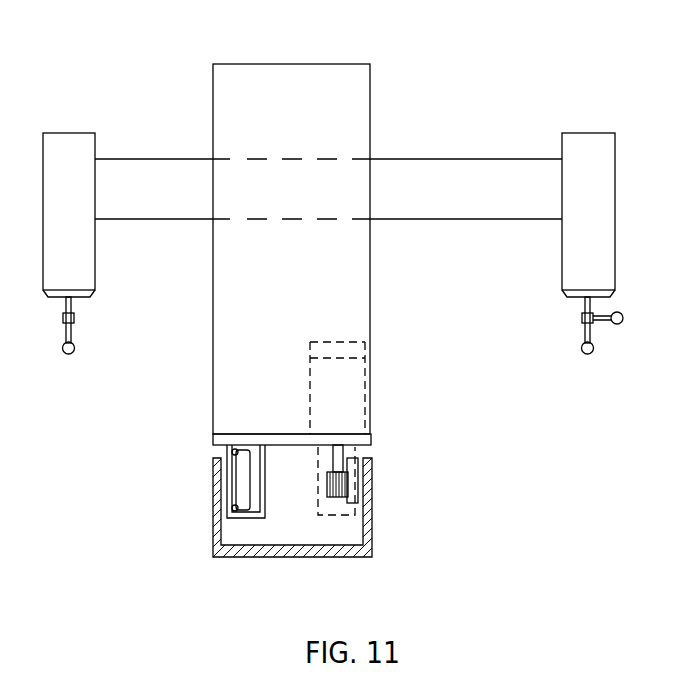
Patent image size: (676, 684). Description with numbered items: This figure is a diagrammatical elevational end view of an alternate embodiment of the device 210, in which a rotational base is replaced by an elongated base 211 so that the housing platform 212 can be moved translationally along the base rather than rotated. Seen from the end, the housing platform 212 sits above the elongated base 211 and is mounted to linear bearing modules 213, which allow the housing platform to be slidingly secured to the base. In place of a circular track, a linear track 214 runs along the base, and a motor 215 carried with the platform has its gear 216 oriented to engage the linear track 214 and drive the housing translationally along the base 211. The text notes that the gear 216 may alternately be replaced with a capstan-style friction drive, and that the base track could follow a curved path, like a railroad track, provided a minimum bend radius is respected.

The device 210 is at (471, 106).
The elongated base 211 is at (372, 522).
The housing platform 212 is at (372, 435).
The linear bearing modules 213 is at (238, 486).
The linear track 214 is at (362, 476).
The motor 215 is at (360, 377).
The gear 216 is at (337, 497).